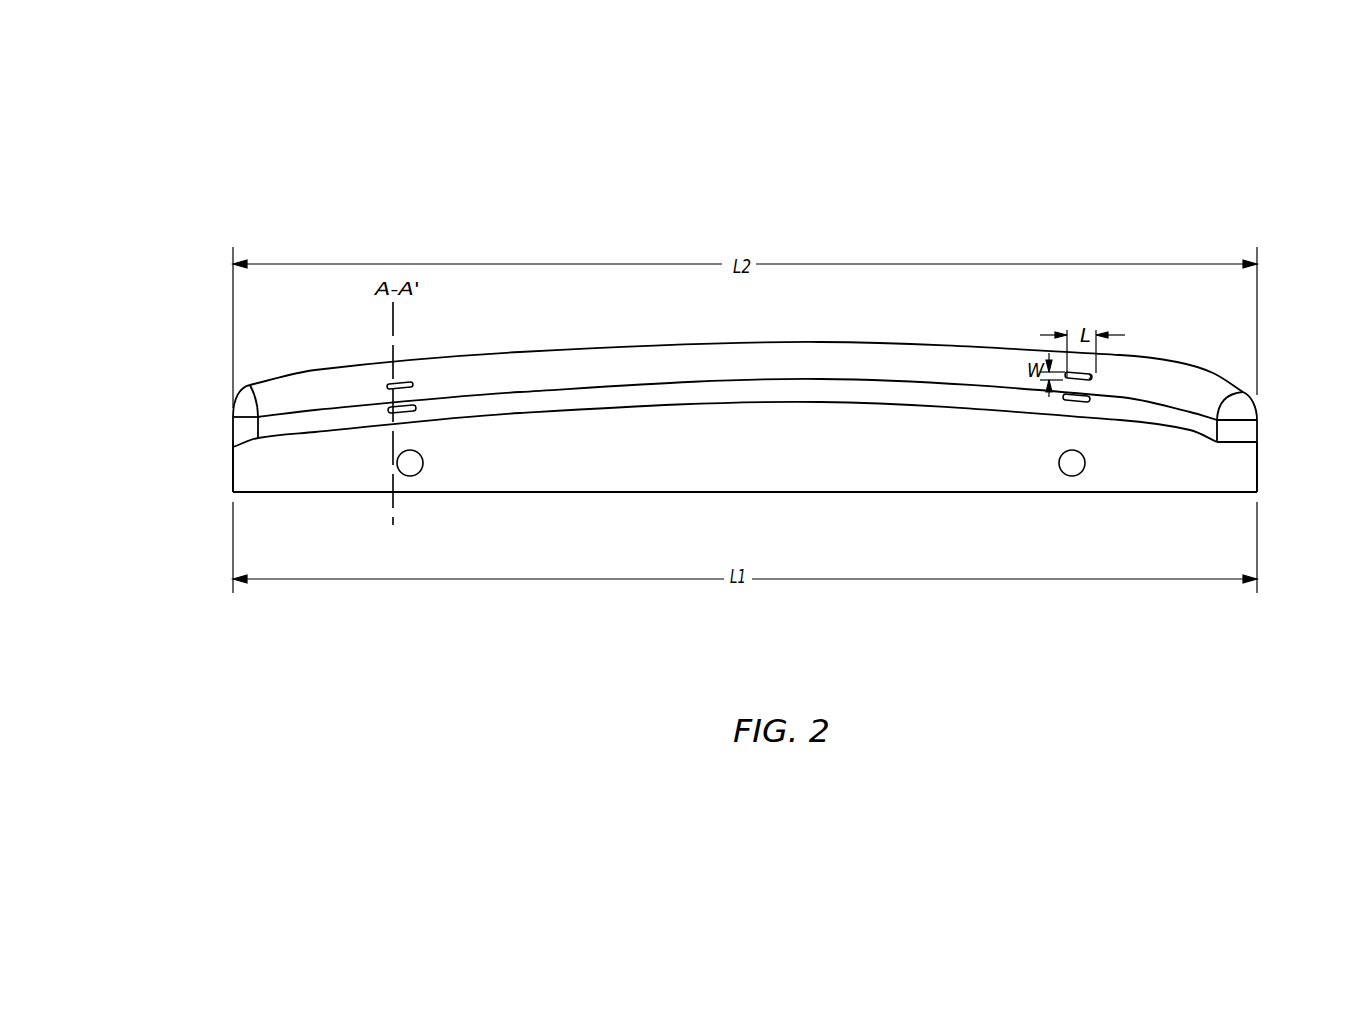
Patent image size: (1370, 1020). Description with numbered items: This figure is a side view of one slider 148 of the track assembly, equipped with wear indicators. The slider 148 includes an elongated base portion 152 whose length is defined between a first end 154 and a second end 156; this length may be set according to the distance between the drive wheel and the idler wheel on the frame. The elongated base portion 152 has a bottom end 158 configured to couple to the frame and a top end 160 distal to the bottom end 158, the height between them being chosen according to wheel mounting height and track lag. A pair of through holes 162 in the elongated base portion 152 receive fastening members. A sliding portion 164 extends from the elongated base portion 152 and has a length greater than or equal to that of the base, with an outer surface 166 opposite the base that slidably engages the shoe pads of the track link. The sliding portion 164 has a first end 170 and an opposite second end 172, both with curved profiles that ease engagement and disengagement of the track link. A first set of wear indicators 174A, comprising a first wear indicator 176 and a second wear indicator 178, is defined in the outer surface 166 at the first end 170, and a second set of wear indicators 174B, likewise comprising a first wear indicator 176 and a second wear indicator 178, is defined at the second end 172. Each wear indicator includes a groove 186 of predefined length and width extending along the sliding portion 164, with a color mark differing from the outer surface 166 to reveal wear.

The slider 148 is at (1280, 167).
The elongated base portion 152 is at (917, 470).
The first end 154 is at (233, 473).
The second end 156 is at (1257, 470).
The bottom end 158 is at (1110, 493).
The top end 160 is at (940, 407).
The through holes 162 is at (412, 466).
The sliding portion 164 is at (918, 360).
The outer surface 166 is at (750, 368).
The first end 170 is at (233, 413).
The second end 172 is at (1257, 410).
The first set of wear indicators 174A is at (361, 395).
The second set of wear indicators 174B is at (1110, 372).
The first wear indicator 176 is at (403, 383).
The second wear indicator 178 is at (413, 407).
The groove 186 is at (1092, 378).